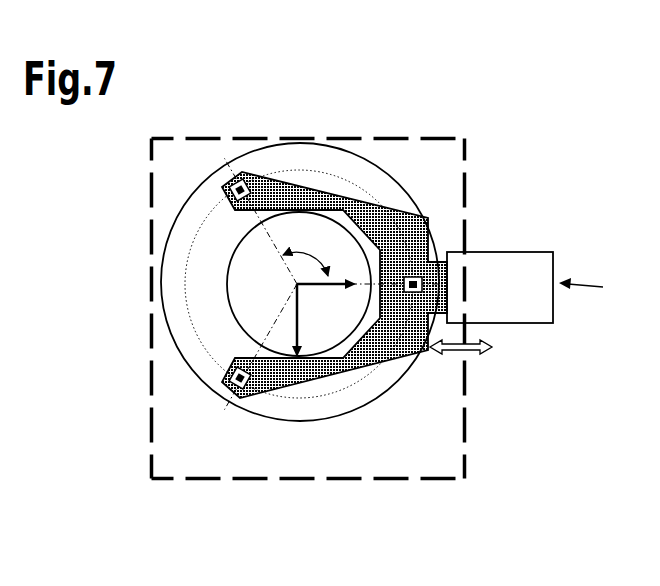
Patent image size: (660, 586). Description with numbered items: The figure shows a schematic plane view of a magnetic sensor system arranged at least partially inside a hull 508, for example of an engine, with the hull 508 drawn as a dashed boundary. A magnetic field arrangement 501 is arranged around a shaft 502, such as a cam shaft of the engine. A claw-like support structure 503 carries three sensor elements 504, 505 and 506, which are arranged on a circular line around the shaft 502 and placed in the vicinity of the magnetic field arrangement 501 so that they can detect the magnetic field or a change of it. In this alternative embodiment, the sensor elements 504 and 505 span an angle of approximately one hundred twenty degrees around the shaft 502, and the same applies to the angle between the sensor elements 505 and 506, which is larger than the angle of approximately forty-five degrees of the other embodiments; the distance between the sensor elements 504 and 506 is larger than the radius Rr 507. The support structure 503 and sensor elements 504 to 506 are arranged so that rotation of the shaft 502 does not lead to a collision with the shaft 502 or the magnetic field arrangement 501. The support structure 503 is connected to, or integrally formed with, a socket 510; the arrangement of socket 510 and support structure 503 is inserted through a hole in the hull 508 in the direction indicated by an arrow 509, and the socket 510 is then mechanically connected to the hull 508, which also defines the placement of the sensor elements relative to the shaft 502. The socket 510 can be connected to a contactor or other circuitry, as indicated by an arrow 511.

The magnetic field arrangement 501 is at (203, 383).
The shaft 502 is at (229, 262).
The support structure 503 is at (394, 360).
The sensor element 504 is at (243, 400).
The sensor element 505 is at (413, 277).
The sensor element 506 is at (238, 173).
The radius Rr 507 is at (291, 296).
The hull 508 is at (227, 480).
The arrow 509 is at (470, 357).
The socket 510 is at (541, 252).
The arrow 511 is at (603, 292).